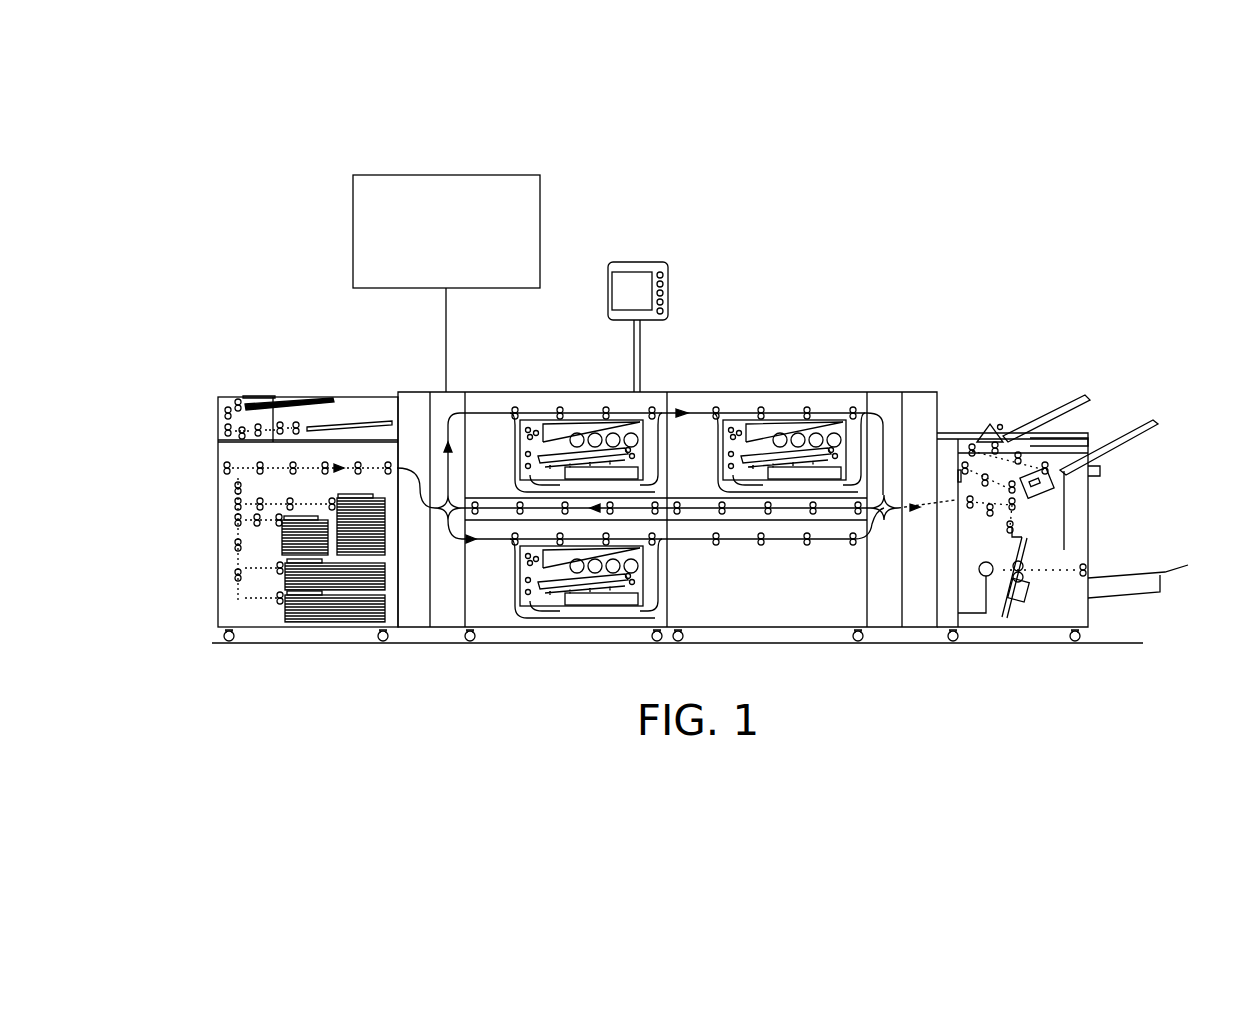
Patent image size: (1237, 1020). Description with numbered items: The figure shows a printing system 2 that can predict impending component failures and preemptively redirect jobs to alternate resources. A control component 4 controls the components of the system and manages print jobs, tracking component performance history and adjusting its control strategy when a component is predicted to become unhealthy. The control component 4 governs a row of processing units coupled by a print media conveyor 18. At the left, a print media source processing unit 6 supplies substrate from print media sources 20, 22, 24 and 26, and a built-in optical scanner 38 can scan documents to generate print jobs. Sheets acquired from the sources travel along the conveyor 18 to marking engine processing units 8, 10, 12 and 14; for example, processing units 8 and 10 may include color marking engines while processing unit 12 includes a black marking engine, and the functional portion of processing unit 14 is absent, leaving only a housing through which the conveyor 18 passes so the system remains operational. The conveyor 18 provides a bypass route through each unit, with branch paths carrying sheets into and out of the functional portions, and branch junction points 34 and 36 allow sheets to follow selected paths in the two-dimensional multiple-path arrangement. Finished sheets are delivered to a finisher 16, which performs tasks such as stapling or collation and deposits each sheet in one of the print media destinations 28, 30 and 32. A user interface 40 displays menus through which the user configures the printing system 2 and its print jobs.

The printing system 2 is at (318, 114).
The control component 4 is at (447, 175).
The print media source processing unit 6 is at (200, 452).
The processing unit 8 is at (548, 392).
The processing unit 10 is at (758, 392).
The processing unit 12 is at (500, 618).
The processing unit 14 is at (717, 618).
The finisher 16 is at (1000, 378).
The print media conveyor 18 is at (678, 410).
The print media source 20 is at (283, 542).
The print media source 22 is at (333, 618).
The print media source 24 is at (285, 578).
The print media source 26 is at (375, 530).
The print media destination 28 is at (1068, 403).
The print media destination 30 is at (1130, 432).
The print media destination 32 is at (1118, 572).
The branch junction point 34 is at (452, 500).
The branch junction point 36 is at (888, 503).
The optical scanner 38 is at (290, 397).
The user interface 40 is at (622, 290).